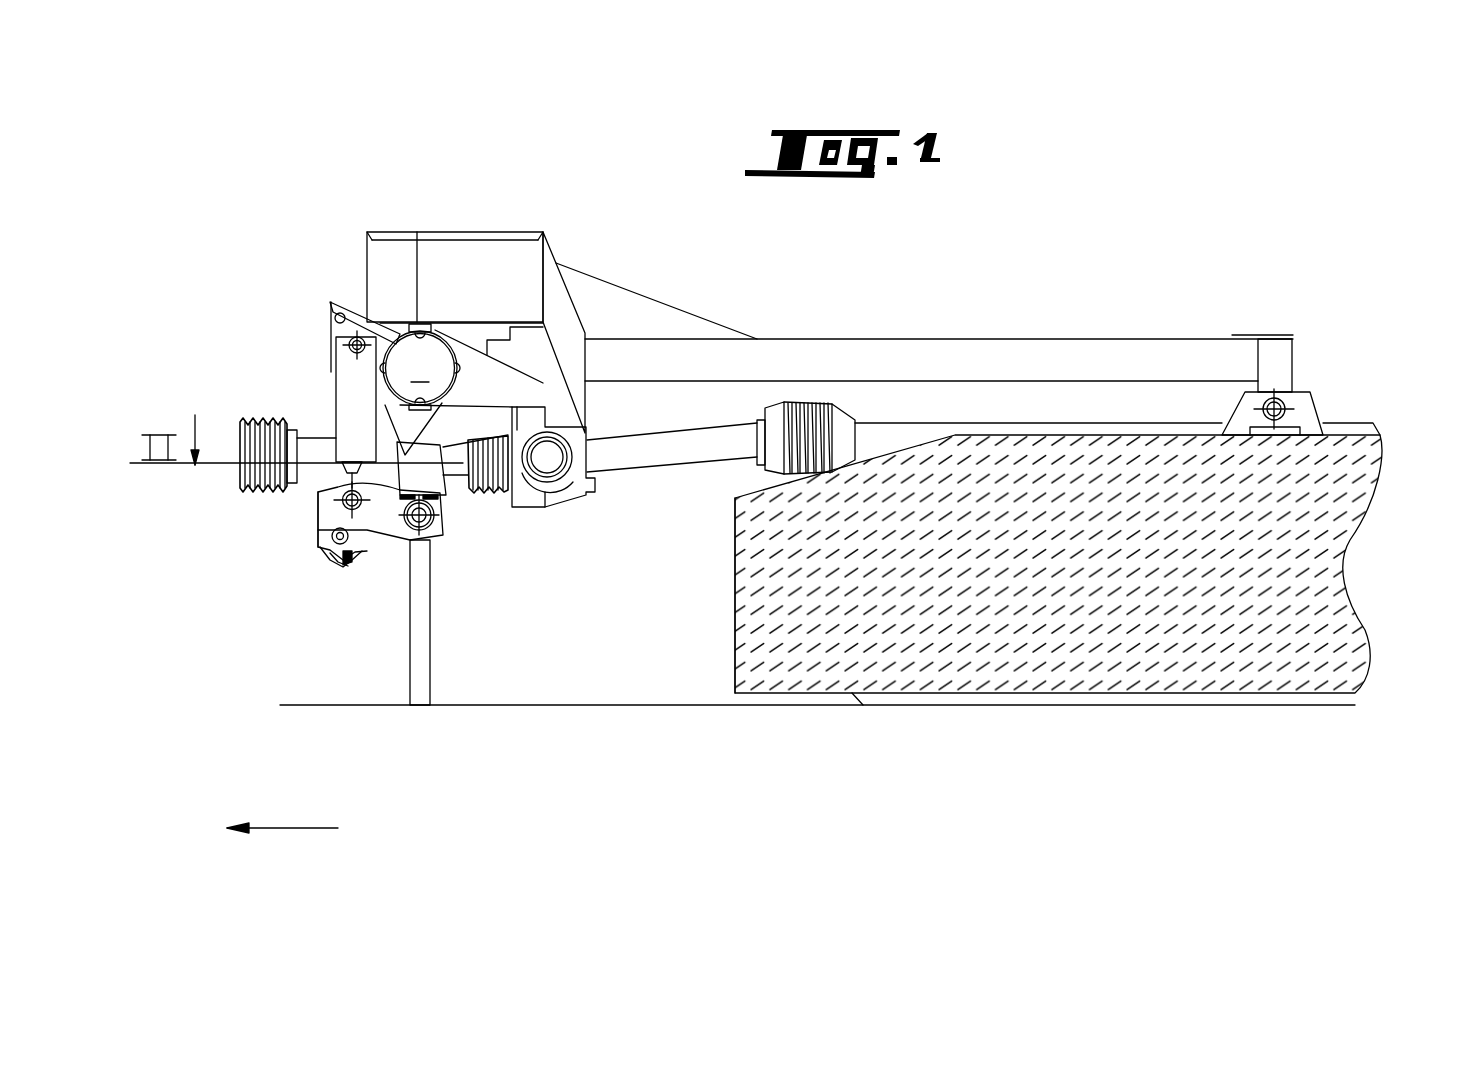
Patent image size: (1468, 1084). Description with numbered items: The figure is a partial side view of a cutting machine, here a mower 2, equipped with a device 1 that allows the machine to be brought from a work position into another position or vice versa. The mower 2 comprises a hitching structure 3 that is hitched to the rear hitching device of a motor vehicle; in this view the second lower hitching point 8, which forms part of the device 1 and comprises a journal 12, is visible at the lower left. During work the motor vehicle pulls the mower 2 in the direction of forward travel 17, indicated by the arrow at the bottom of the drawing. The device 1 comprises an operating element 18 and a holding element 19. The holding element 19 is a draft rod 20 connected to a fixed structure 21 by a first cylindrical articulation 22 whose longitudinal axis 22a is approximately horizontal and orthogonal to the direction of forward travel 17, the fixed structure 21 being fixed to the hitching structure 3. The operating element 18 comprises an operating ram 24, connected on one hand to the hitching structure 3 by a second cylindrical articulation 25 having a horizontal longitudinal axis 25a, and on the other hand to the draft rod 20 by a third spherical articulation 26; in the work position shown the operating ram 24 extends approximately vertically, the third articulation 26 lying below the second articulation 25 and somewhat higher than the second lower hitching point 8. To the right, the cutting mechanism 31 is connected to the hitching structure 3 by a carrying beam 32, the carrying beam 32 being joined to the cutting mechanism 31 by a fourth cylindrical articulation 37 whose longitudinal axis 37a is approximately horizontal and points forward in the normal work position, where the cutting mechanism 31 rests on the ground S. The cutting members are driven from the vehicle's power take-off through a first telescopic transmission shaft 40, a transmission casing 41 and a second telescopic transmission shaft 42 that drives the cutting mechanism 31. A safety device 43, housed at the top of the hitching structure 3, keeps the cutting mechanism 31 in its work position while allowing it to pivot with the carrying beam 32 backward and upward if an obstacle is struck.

The device 1 is at (327, 557).
The mower 2 is at (1425, 588).
The hitching structure 3 is at (461, 389).
The second lower hitching point 8 is at (348, 565).
The journal 12 is at (333, 540).
The direction of forward travel 17 is at (290, 828).
The operating element 18 is at (346, 554).
The holding element 19 is at (390, 540).
The draft rod 20 is at (318, 508).
The fixed structure 21 is at (435, 483).
The first cylindrical articulation 22 is at (423, 518).
The longitudinal axis 22a is at (425, 523).
The operating ram 24 is at (353, 408).
The second cylindrical articulation 25 is at (349, 346).
The longitudinal axis 25a is at (352, 338).
The third spherical articulation 26 is at (346, 504).
The cutting mechanism 31 is at (762, 617).
The carrying beam 32 is at (1015, 352).
The fourth cylindrical articulation 37 is at (1283, 411).
The longitudinal axis 37a is at (1280, 403).
The first telescopic transmission shaft 40 is at (323, 453).
The transmission casing 41 is at (550, 460).
The second telescopic transmission shaft 42 is at (680, 453).
The safety device 43 is at (522, 283).
The ground S is at (553, 707).